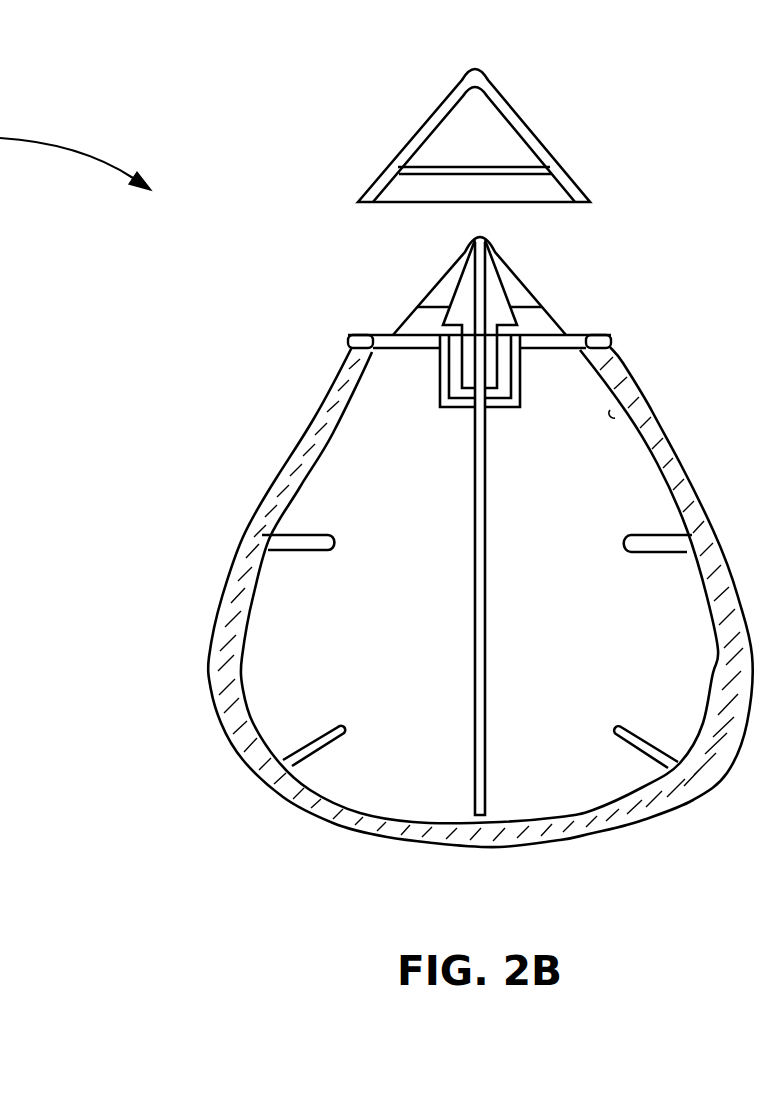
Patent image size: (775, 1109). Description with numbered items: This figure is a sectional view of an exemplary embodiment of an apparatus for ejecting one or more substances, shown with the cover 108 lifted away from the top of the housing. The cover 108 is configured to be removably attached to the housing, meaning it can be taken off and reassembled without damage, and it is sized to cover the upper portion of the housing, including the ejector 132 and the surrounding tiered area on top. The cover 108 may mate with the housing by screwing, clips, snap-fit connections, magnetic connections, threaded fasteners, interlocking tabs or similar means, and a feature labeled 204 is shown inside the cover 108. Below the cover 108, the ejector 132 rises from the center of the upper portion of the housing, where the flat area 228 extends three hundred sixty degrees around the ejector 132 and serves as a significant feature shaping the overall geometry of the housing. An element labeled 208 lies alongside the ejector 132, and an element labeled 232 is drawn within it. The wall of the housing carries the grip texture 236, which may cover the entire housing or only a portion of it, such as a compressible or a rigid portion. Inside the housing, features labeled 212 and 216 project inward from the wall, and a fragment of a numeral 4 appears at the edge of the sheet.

The cover 108 is at (418, 115).
The cap ribs 204 is at (503, 167).
The ejector 132 is at (427, 291).
The spout channel 208 is at (542, 305).
The valve arrow 232 is at (507, 273).
The flat area 228 is at (390, 328).
The grip texture 236 is at (312, 430).
The upper tabs 212 is at (248, 537).
The lower tabs 216 is at (317, 735).
The partial numeral 4 is at (1, 378).